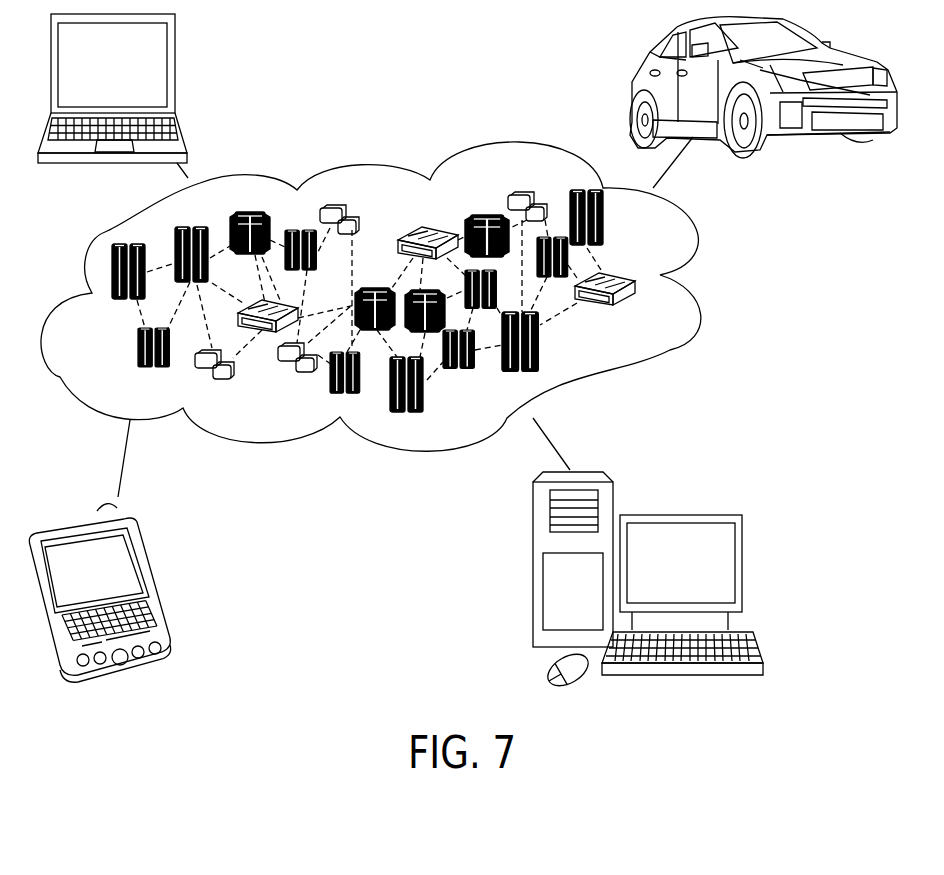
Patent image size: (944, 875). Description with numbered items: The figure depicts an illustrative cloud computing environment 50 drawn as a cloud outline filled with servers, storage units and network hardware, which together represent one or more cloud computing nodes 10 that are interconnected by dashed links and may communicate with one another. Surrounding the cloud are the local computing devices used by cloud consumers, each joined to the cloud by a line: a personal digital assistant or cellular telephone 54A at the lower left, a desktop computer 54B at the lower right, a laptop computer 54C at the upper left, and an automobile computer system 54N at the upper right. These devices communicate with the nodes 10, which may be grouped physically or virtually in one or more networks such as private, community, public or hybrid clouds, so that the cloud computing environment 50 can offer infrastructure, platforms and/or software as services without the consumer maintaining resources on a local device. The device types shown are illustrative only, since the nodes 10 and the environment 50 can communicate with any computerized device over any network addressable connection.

The cloud computing node 10 is at (657, 330).
The cloud computing environment 50 is at (697, 230).
The personal digital assistant or cellular telephone 54A is at (145, 565).
The desktop computer 54B is at (742, 560).
The laptop computer 54C is at (175, 65).
The automobile computer system 54N is at (807, 40).